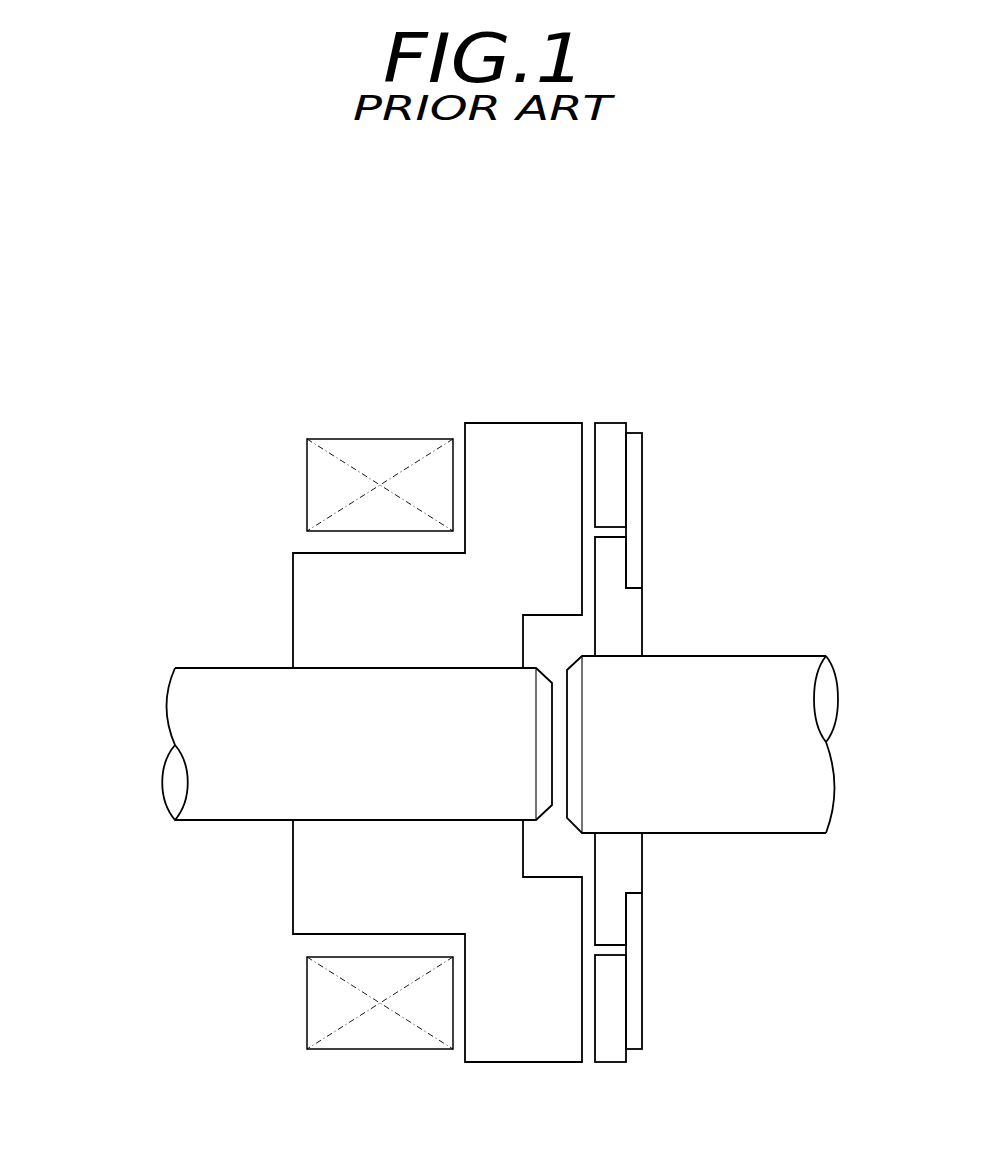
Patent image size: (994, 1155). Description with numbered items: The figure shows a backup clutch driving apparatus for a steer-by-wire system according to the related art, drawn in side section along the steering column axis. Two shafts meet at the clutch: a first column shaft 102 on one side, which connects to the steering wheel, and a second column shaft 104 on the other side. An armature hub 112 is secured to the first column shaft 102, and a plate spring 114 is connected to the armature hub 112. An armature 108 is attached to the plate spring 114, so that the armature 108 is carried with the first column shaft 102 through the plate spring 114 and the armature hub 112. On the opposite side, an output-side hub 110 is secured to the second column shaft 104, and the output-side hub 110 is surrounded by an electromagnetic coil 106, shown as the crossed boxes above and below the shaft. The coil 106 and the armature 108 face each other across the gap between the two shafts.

The first column shaft 102 is at (778, 665).
The second column shaft 104 is at (177, 707).
The electromagnetic coil 106 is at (392, 448).
The armature 108 is at (618, 432).
The output-side hub 110 is at (538, 445).
The armature hub 112 is at (633, 610).
The plate spring 114 is at (632, 475).